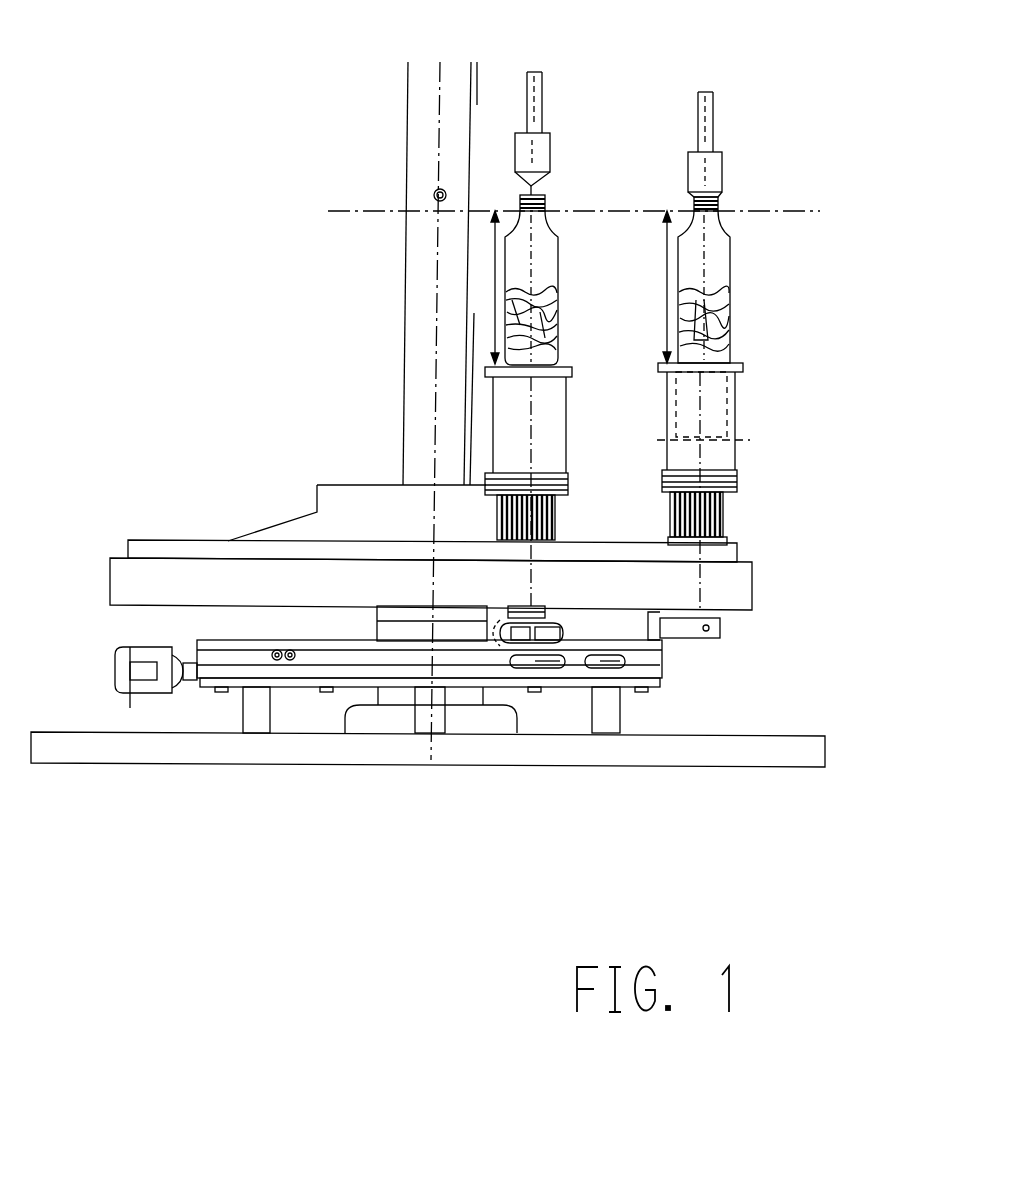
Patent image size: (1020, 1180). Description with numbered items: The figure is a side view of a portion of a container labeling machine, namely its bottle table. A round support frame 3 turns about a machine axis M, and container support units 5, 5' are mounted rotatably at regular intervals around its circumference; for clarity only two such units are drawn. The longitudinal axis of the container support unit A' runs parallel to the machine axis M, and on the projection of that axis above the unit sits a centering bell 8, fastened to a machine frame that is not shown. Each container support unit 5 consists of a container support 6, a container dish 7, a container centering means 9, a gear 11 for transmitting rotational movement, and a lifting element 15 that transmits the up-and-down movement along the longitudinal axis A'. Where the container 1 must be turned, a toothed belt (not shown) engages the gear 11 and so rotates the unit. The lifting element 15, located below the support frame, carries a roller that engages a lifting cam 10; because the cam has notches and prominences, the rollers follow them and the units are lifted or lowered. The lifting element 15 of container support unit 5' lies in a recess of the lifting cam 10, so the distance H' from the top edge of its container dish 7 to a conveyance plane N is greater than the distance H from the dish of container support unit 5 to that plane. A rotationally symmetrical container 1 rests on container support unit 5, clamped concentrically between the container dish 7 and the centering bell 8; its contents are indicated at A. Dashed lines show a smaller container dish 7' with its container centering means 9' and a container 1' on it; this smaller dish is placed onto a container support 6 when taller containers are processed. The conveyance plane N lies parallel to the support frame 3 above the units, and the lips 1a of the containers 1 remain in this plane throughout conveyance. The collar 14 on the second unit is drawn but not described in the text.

The container 1 is at (735, 287).
The lip of the container 1a is at (718, 211).
The compressed container 1' is at (776, 383).
The support frame 3 is at (175, 585).
The container support unit 5 is at (818, 567).
The container support unit 5' is at (416, 451).
The container support 6 is at (668, 482).
The container dish 7 is at (732, 490).
The container dish 7' is at (649, 491).
The centering bell 8 is at (712, 176).
The container centering means 9 is at (726, 353).
The container centering means 9' is at (780, 428).
The lifting cam 10 is at (628, 652).
The gear 11 is at (740, 522).
The bellows collar of second station 14 is at (542, 492).
The lifting element 15 is at (722, 628).
The uncompressed container volume A is at (550, 288).
The longitudinal axis of the container support unit A' is at (547, 386).
The distance H is at (655, 287).
The distance H' is at (482, 287).
The machine axis M is at (444, 73).
The conveyance plane N is at (345, 211).